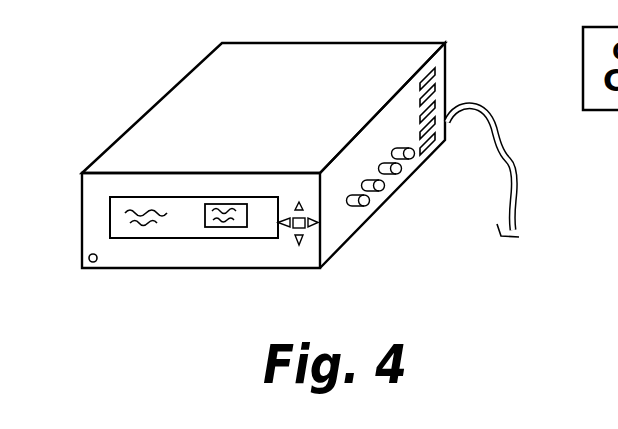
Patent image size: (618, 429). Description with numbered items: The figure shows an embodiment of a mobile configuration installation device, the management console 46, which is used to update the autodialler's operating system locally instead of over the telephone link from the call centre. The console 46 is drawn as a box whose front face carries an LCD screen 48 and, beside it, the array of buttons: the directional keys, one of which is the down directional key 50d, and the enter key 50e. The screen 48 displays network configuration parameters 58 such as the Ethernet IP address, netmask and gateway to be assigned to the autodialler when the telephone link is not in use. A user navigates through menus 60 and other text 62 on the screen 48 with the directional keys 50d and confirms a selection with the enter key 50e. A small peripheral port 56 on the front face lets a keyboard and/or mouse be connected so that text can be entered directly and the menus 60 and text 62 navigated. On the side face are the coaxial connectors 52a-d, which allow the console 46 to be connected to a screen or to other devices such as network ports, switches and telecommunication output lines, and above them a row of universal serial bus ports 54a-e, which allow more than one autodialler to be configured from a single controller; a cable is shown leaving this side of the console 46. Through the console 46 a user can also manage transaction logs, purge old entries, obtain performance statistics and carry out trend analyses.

The management console 46 is at (138, 95).
The LCD screen 48 is at (110, 202).
The directional key 50d is at (303, 244).
The enter key 50e is at (307, 225).
The coaxial connectors 52a-d is at (392, 203).
The universal serial bus (USB) ports 54a-e is at (446, 97).
The peripheral port 56 is at (84, 263).
The network configuration parameters 58 is at (127, 211).
The menus 60 is at (236, 237).
The text 62 is at (148, 238).